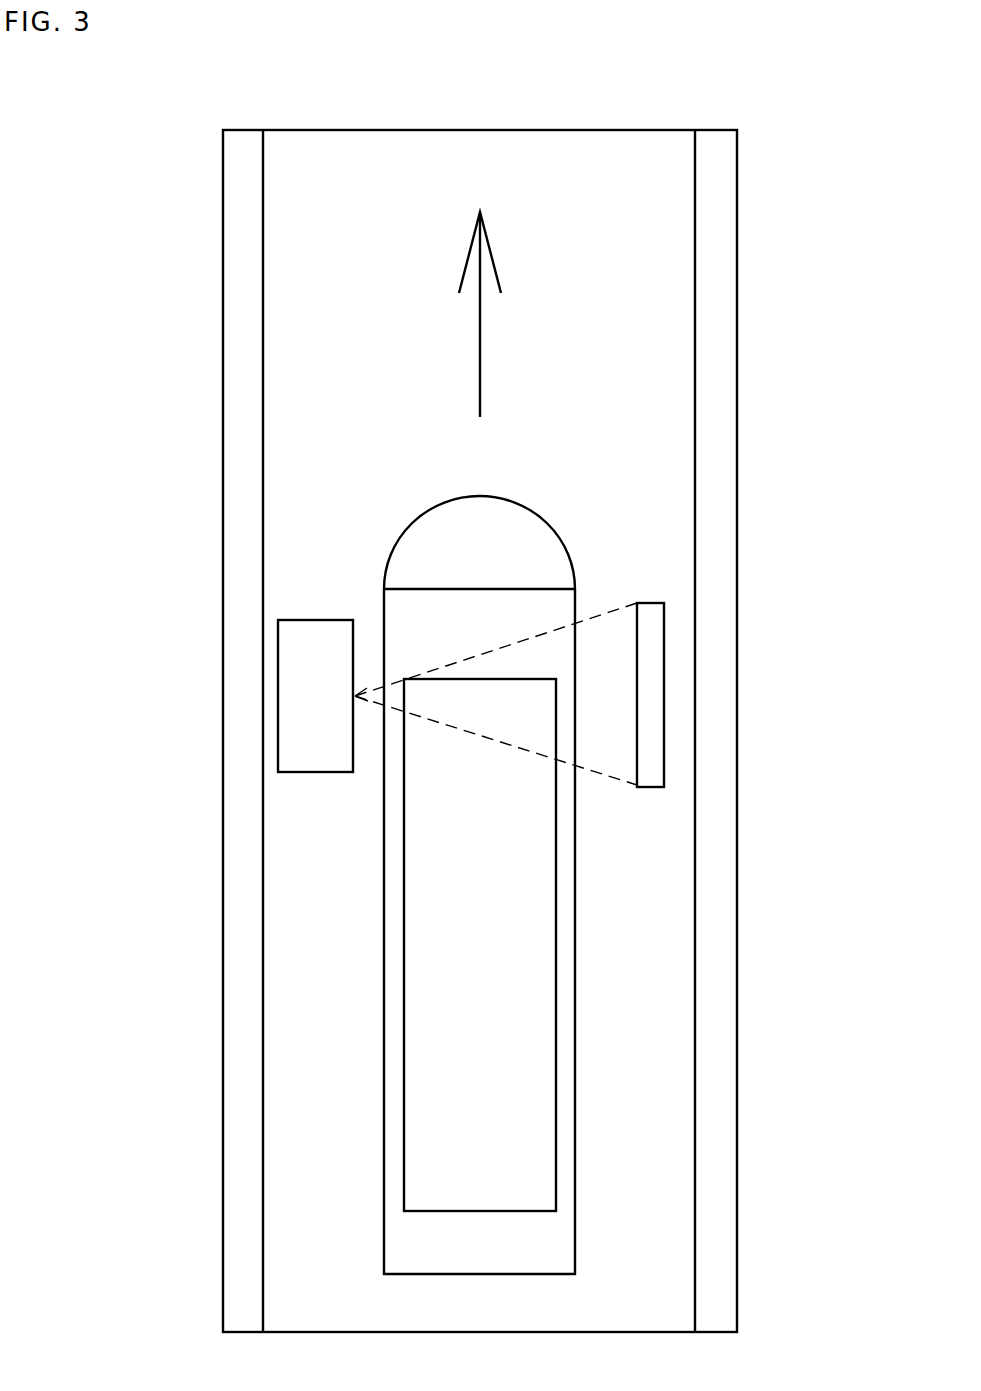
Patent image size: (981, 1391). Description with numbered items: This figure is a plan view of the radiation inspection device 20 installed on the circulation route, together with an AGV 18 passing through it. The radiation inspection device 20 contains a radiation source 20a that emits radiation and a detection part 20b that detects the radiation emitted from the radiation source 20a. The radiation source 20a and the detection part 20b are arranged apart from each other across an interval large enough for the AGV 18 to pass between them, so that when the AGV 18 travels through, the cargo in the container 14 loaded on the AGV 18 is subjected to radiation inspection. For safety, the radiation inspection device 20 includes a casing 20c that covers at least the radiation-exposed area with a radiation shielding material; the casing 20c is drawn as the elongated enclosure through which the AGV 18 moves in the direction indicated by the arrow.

The radiation inspection device 20 is at (745, 578).
The casing 20c is at (723, 353).
The radiation source 20a is at (318, 762).
The detection part 20b is at (653, 778).
The container 14 is at (538, 1035).
The AGV 18 is at (557, 1253).